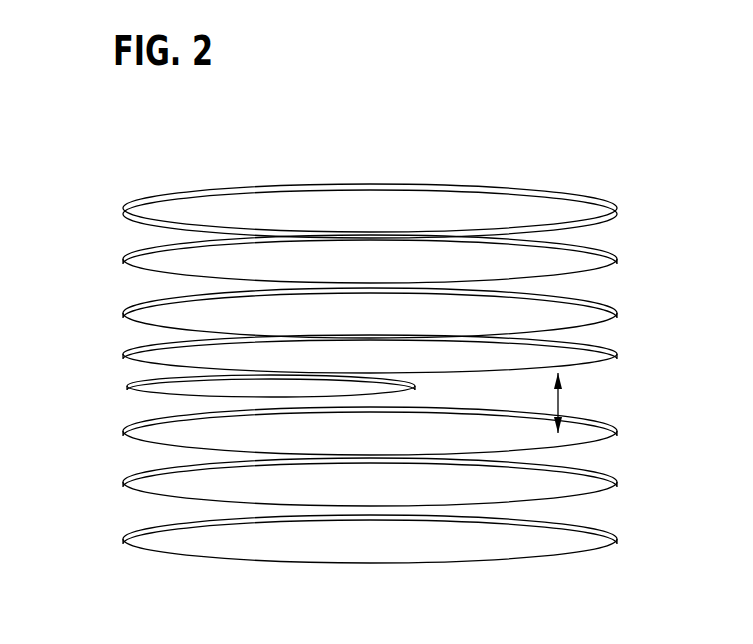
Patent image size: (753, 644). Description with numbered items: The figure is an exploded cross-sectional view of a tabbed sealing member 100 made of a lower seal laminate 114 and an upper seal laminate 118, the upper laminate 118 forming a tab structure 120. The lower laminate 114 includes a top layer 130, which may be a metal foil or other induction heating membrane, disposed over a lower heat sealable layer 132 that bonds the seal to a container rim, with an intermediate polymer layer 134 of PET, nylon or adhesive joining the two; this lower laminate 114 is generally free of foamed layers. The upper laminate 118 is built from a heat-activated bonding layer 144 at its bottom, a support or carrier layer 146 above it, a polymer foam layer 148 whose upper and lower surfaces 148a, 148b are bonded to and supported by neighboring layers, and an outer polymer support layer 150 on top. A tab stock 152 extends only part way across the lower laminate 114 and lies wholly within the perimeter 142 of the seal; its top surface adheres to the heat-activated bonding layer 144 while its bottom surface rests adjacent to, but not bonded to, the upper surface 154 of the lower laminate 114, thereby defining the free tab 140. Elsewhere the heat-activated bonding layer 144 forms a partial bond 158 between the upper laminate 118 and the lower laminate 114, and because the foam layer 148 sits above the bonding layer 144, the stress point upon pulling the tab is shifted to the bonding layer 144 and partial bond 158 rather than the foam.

The tabbed sealing member 100 is at (553, 131).
The lower seal laminate 114 is at (85, 424).
The upper seal laminate 118 is at (88, 200).
The tab structure 120 is at (243, 203).
The top layer 130 is at (603, 432).
The lower heat sealable layer 132 is at (557, 547).
The intermediate polymer layer 134 is at (615, 485).
The free tab 140 is at (374, 185).
The perimeter 142 is at (613, 442).
The heat-activated bonding layer 144 is at (610, 352).
The support or carrier layer 146 is at (600, 308).
The polymer foam layer 148 is at (603, 257).
The upper surface of foamed polymer layer 148a is at (577, 253).
The lower surface of foamed polymer layer 148b is at (590, 278).
The outer polymer support layer 150 is at (573, 207).
The tab stock 152 is at (163, 385).
The upper surface of lower laminate 154 is at (152, 432).
The partial bond 158 is at (558, 396).